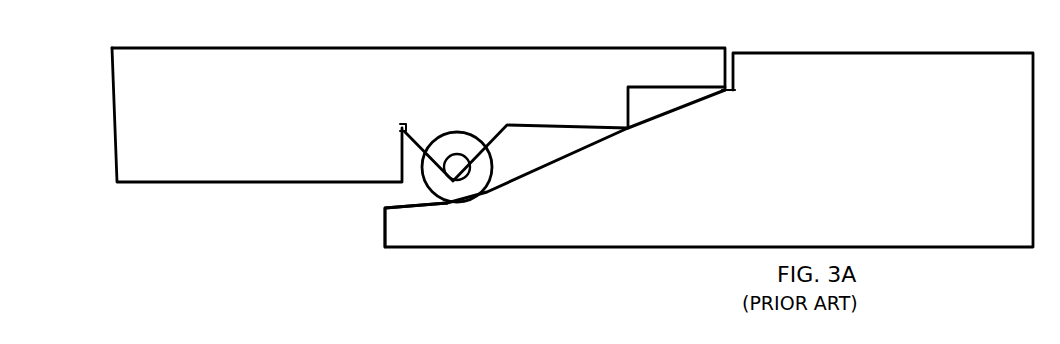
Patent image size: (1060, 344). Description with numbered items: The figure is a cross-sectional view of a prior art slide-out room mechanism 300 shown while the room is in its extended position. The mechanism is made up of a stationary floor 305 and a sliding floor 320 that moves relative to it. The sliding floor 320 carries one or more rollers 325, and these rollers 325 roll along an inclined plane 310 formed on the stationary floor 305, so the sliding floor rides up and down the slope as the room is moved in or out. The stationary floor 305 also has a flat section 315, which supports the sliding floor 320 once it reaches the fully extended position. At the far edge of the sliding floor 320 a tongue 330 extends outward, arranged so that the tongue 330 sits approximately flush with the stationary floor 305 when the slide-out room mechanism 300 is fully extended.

The slide-out room mechanism 300 is at (572, 189).
The stationary floor 305 is at (913, 222).
The inclined plane 310 is at (568, 158).
The flat section 315 is at (415, 208).
The sliding floor 320 is at (225, 135).
The rollers 325 is at (433, 181).
The tongue 330 is at (712, 72).